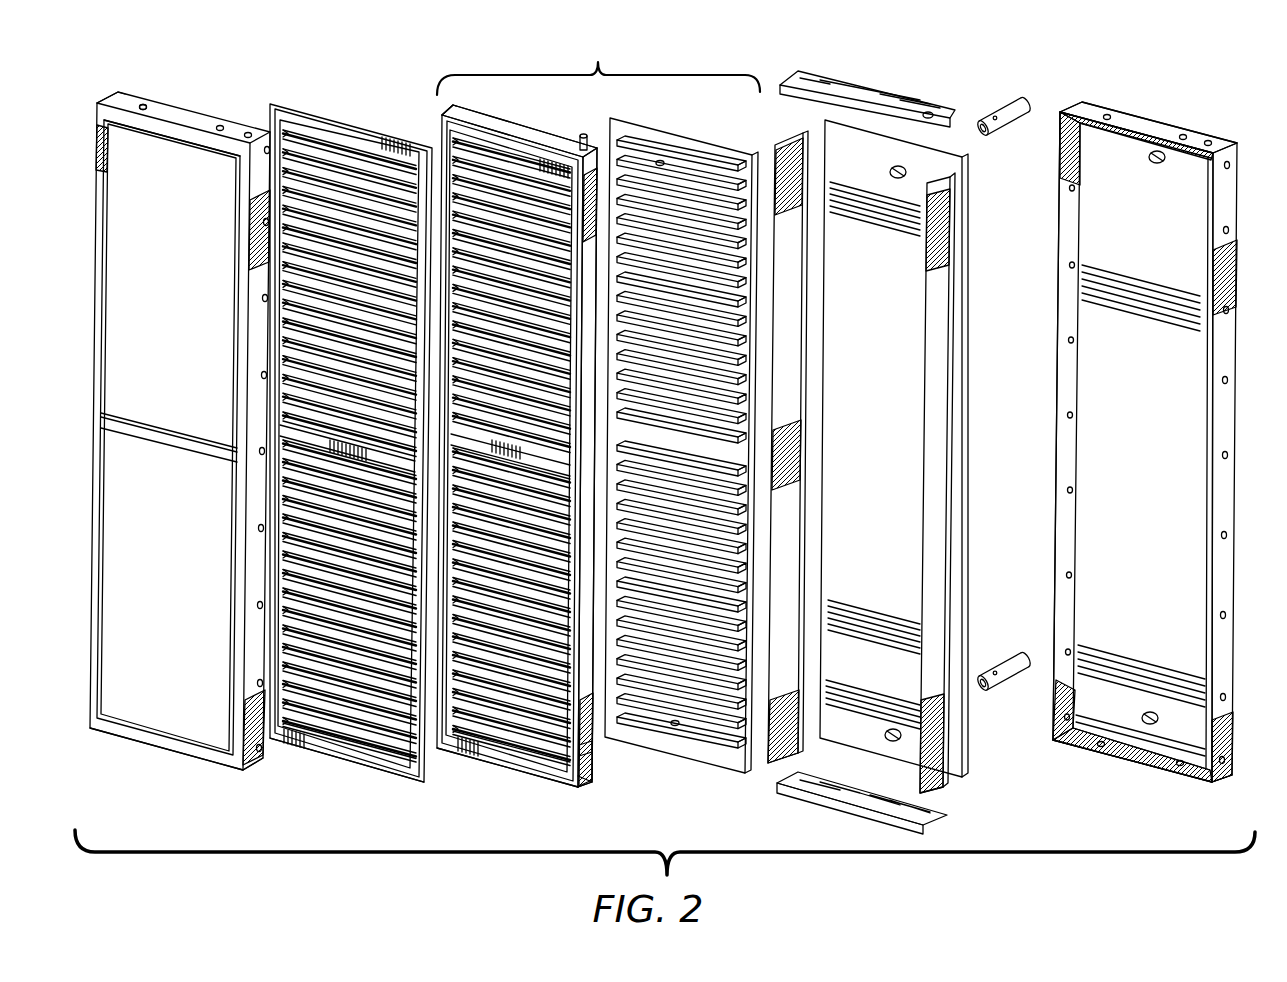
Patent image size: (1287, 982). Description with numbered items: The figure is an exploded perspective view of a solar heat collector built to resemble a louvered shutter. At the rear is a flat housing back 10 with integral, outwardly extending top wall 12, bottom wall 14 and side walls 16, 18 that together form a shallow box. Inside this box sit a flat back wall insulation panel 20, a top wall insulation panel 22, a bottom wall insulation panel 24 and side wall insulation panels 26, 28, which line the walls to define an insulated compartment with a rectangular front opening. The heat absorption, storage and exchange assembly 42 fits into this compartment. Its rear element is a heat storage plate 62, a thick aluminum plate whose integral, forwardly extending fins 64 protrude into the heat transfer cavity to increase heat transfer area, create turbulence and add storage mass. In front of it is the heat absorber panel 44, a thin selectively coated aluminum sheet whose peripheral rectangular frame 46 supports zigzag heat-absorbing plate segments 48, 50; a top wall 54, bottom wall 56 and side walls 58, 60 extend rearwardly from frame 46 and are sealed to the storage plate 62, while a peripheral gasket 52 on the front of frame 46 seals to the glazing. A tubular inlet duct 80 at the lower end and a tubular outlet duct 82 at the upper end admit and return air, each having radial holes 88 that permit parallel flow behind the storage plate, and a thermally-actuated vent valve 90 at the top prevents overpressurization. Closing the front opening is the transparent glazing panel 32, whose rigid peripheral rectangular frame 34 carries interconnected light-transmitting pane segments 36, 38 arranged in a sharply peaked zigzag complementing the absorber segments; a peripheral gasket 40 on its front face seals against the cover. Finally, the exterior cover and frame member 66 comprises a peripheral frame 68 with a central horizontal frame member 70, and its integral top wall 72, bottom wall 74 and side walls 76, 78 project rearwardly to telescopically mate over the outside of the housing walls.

The housing back 10 is at (1185, 214).
The top wall 12 is at (1160, 128).
The bottom wall 14 is at (1150, 758).
The side wall 16 is at (1063, 332).
The side wall 18 is at (1232, 337).
The back wall insulation panel 20 is at (968, 232).
The top wall insulation panel 22 is at (870, 92).
The bottom wall insulation panel 24 is at (945, 820).
The side wall insulation panel 26 is at (795, 148).
The side wall insulation panel 28 is at (948, 522).
The glazing panel 32 is at (328, 122).
The peripheral rectangular frame 34 is at (392, 137).
The pane segment 36 is at (322, 732).
The pane segment 38 is at (362, 746).
The peripheral gasket 40 is at (414, 776).
The heat absorption, storage and exchange assembly 42 is at (598, 64).
The heat absorber panel 44 is at (522, 140).
The peripheral rectangular frame 46 is at (592, 777).
The plate segment 48 is at (490, 737).
The plate segment 50 is at (522, 747).
The peripheral gasket 52 is at (560, 762).
The top wall 54 is at (478, 124).
The bottom wall 56 is at (578, 777).
The side wall 58 is at (441, 110).
The side wall 60 is at (592, 752).
The heat storage plate 62 is at (685, 737).
The fins 64 is at (715, 747).
The exterior cover and frame member 66 is at (186, 130).
The peripheral frame 68 is at (200, 145).
The central horizontal frame member 70 is at (168, 440).
The top wall 72 is at (143, 103).
The bottom wall 74 is at (253, 762).
The side wall 76 is at (112, 95).
The side wall 78 is at (258, 154).
The tubular inlet duct 80 is at (1012, 664).
The tubular outlet duct 82 is at (1010, 102).
The radial holes 88 is at (993, 116).
The thermally-actuated vent valve 90 is at (583, 134).